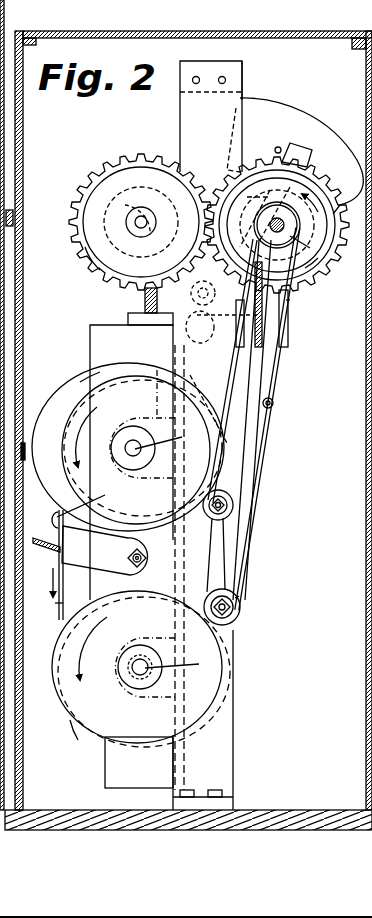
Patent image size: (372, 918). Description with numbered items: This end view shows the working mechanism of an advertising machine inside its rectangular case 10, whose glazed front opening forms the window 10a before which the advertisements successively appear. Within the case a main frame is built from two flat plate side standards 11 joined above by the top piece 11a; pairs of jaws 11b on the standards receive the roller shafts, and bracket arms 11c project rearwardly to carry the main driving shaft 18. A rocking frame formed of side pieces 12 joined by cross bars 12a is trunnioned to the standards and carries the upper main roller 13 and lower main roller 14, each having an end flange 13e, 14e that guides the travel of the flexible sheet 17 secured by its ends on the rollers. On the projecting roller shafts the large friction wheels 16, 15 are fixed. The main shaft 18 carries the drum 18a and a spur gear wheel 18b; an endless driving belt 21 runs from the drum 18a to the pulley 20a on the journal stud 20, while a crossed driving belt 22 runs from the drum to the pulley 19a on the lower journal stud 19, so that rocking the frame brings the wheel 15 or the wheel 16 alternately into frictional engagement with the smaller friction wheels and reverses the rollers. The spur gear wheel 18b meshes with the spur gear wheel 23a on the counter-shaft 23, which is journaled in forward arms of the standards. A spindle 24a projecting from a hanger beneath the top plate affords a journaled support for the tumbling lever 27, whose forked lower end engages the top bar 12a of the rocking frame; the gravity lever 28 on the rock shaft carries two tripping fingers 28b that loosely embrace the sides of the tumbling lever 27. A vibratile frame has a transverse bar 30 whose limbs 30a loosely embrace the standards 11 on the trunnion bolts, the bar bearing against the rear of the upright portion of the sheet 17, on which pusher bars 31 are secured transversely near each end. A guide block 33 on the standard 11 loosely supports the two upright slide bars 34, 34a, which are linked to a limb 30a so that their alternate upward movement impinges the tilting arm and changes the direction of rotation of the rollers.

The case 10 is at (186, 458).
The window 10a is at (33, 546).
The side standards 11 is at (180, 132).
The top piece 11a is at (246, 84).
The jaws 11b is at (141, 410).
The bracket arms 11c is at (125, 205).
The side pieces 12 is at (86, 340).
The cross bars 12a is at (190, 328).
The upper main roller 13 is at (142, 450).
The flange 13e is at (80, 382).
The lower main roller 14 is at (162, 667).
The flange 14e is at (58, 756).
The friction wheel 15 is at (72, 648).
The friction wheel 16 is at (77, 396).
The flexible sheet 17 is at (55, 603).
The main driving shaft 18 is at (277, 232).
The drum 18a is at (305, 268).
The spur gear wheel 18b is at (298, 283).
The journal stud 19 is at (240, 608).
The pulley 19a is at (235, 598).
The journal stud 20 is at (240, 508).
The pulley 20a is at (240, 522).
The endless driving belt 21 is at (230, 372).
The crossed driving belt 22 is at (250, 455).
The counter-shaft 23 is at (147, 223).
The spur gear wheel 23a is at (85, 247).
The spindle 24a is at (203, 293).
The tumbling lever 27 is at (300, 147).
The gravity lever 28 is at (313, 173).
The tripping fingers 28b is at (278, 147).
The transverse bar 30 is at (77, 578).
The limbs 30a is at (105, 550).
The pusher bars 31 is at (92, 502).
The guide block 33 is at (288, 340).
The slide bar 34 is at (145, 307).
The slide bar 34a is at (288, 308).